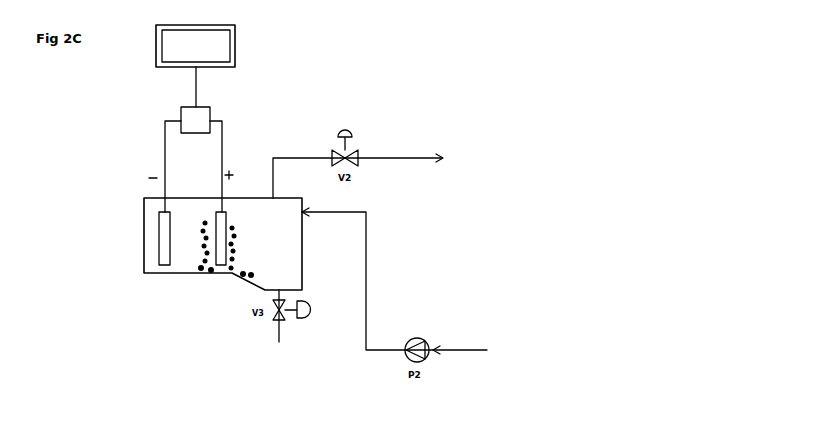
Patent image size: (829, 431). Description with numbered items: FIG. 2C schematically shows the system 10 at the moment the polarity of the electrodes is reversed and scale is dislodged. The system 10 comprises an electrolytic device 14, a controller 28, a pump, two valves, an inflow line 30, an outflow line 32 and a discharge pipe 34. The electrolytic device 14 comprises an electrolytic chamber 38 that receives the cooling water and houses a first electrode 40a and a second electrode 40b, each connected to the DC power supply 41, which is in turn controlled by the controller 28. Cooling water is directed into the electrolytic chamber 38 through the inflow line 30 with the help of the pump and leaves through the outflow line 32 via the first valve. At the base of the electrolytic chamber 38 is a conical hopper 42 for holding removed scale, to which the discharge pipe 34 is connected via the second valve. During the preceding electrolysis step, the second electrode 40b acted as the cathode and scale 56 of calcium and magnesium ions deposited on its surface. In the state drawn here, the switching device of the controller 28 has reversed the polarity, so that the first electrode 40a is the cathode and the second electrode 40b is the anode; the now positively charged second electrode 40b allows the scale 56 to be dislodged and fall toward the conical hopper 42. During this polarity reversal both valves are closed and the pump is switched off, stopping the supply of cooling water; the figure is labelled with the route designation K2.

The system 10 is at (453, 144).
The electrolytic device 14 is at (137, 198).
The controller 28 is at (237, 50).
The inflow line 30 is at (368, 275).
The outflow line 32 is at (303, 158).
The discharge pipe 34 is at (282, 338).
The electrolytic chamber 38 is at (203, 278).
The first electrode 40a is at (157, 240).
The second electrode 40b is at (221, 217).
The DC power supply 41 is at (211, 110).
The conical hopper 42 is at (280, 284).
The scale 56 is at (250, 279).
The circuit K2 is at (386, 352).